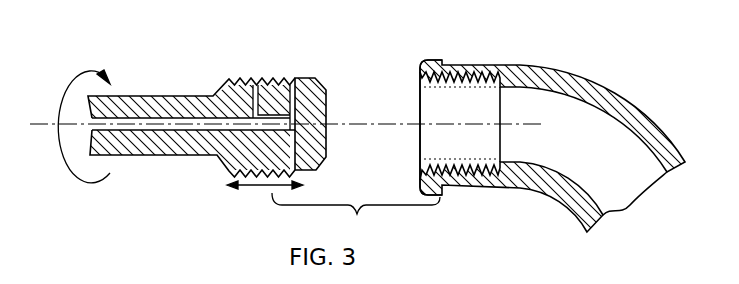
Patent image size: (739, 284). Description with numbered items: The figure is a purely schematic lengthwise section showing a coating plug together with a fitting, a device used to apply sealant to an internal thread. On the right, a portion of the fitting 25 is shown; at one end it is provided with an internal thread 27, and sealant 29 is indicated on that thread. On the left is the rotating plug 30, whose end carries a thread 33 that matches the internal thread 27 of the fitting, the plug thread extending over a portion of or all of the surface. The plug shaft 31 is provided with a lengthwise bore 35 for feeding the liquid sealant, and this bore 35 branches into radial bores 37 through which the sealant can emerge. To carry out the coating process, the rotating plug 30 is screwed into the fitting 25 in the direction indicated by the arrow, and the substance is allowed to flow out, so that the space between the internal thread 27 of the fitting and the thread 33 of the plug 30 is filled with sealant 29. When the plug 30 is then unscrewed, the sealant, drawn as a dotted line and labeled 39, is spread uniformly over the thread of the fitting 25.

The fitting 25 is at (533, 71).
The internal thread 27 is at (465, 77).
The sealant 29 is at (440, 188).
The rotating plug 30 is at (188, 77).
The plug shaft 31 is at (153, 103).
The thread 33 is at (294, 78).
The lengthwise bore 35 is at (145, 125).
The radial bores 37 is at (289, 77).
The sealant (spread, shown as dotted line) 39 is at (500, 162).